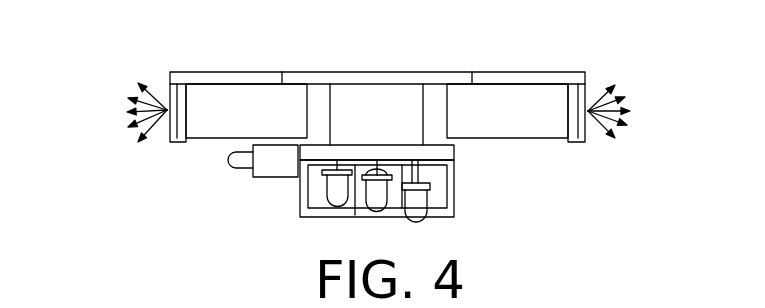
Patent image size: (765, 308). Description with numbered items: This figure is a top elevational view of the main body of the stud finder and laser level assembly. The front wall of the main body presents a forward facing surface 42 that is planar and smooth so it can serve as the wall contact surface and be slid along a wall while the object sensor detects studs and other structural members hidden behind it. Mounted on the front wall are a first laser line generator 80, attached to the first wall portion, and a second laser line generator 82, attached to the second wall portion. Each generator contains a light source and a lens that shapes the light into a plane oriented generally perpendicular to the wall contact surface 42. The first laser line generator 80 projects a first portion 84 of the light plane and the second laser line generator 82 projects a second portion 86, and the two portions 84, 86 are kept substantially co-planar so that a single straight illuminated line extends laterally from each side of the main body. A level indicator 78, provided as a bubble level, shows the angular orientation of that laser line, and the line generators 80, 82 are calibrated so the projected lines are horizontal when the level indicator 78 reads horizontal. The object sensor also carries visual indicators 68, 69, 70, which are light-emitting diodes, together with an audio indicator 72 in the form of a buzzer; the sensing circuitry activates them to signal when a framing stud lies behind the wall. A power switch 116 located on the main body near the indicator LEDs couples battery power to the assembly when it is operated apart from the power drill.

The forward facing surface 42 is at (563, 72).
The audio indicator 72 is at (425, 105).
The first laser line generator 80 is at (202, 118).
The second laser line generator 82 is at (560, 118).
The first portion of the light plane 84 is at (102, 107).
The second portion of the light plane 86 is at (642, 133).
The power switch 116 is at (226, 161).
The level indicator 78 is at (454, 177).
The visual indicator 68 is at (327, 193).
The visual indicator 69 is at (378, 198).
The visual indicator 70 is at (420, 205).